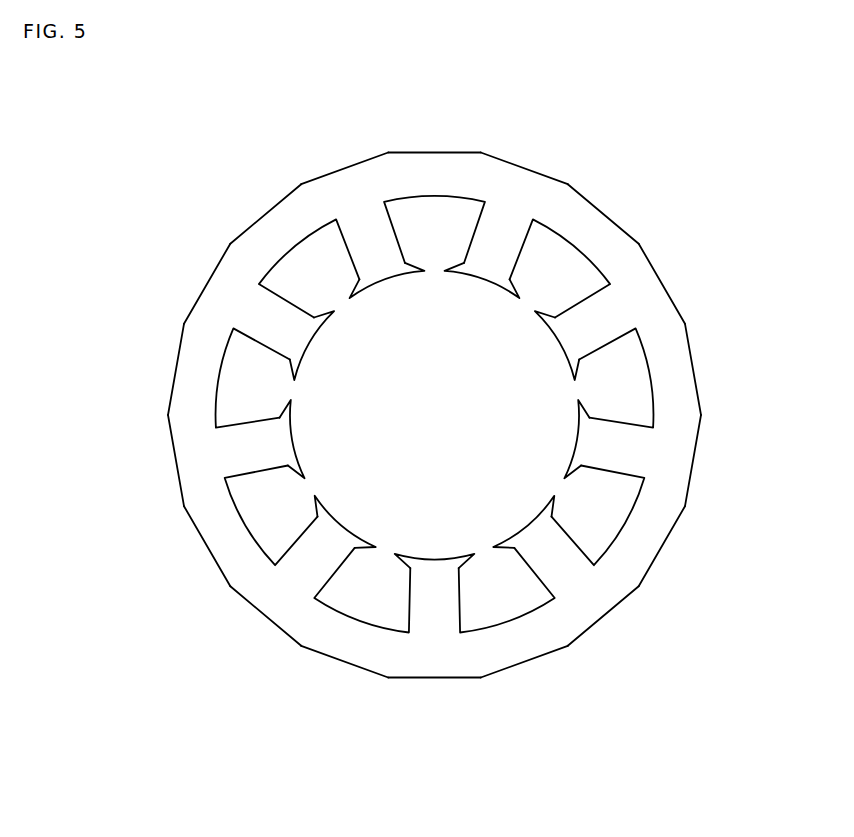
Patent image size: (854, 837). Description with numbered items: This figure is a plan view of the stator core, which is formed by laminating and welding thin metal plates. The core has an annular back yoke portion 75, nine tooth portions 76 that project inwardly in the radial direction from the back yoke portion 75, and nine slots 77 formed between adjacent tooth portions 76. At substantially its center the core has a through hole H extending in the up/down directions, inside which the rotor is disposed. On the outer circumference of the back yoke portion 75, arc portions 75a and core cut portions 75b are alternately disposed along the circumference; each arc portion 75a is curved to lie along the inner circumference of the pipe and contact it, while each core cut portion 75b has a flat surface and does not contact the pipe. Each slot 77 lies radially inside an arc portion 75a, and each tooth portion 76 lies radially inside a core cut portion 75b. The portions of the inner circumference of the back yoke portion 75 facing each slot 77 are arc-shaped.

The back yoke portion 75 is at (308, 213).
The arc portion 75a is at (431, 152).
The core cut portion 75b is at (346, 170).
The tooth portion 76 is at (377, 253).
The slot 77 is at (317, 271).
The through hole H is at (419, 406).